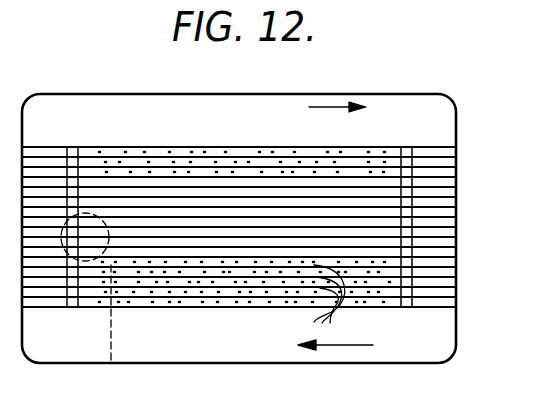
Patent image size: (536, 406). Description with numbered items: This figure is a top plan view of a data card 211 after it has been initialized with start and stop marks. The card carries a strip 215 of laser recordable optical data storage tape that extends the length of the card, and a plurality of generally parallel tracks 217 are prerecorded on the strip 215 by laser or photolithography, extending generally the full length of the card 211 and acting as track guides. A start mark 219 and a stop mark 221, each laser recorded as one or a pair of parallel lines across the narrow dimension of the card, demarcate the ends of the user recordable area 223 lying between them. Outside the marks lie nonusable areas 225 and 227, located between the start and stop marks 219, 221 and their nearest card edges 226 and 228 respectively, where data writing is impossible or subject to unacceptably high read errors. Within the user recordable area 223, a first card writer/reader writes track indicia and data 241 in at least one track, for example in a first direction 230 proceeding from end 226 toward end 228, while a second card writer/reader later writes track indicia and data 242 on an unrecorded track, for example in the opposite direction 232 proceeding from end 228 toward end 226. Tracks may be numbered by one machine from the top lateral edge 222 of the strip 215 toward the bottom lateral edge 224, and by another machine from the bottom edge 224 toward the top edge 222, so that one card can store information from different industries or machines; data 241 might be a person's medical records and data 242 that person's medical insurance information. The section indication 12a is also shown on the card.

The data card 211 is at (103, 84).
The strip 215 is at (170, 289).
The tracks 217 is at (342, 300).
The start mark 219 is at (78, 147).
The stop mark 221 is at (412, 147).
The top lateral edge 222 is at (163, 147).
The user recordable area 223 is at (322, 202).
The bottom lateral edge 224 is at (90, 311).
The nonusable area 225 is at (39, 144).
The card edge 226 is at (22, 348).
The nonusable area 227 is at (440, 138).
The card edge 228 is at (453, 317).
The first direction 230 is at (334, 103).
The second direction 232 is at (341, 347).
The track indicia and data 241 is at (235, 166).
The track indicia and data 242 is at (240, 266).
The section line 12a is at (111, 363).